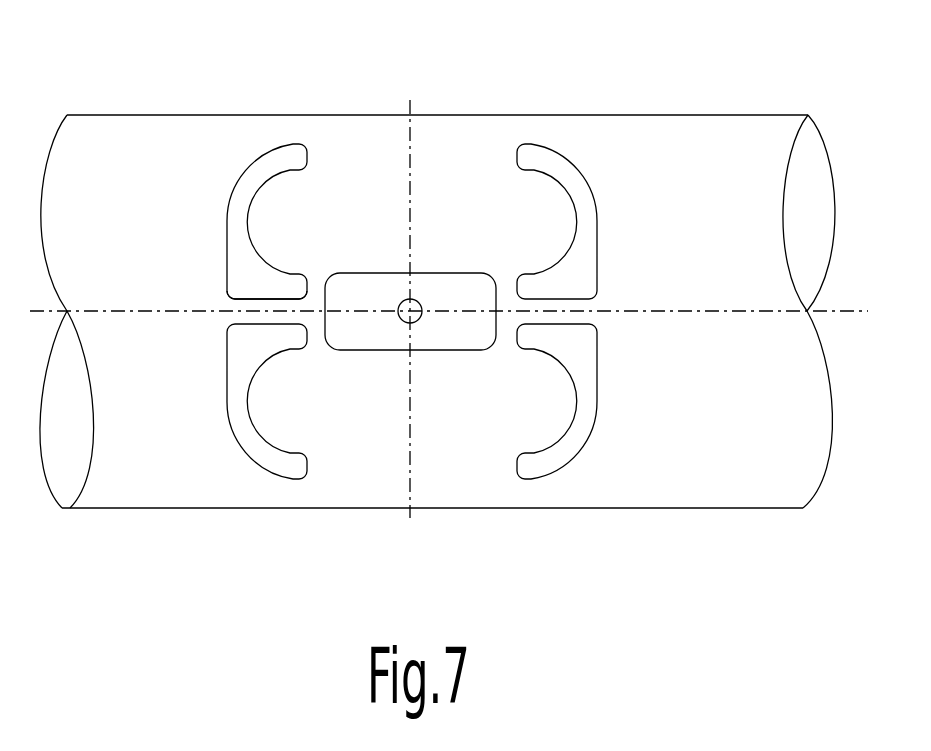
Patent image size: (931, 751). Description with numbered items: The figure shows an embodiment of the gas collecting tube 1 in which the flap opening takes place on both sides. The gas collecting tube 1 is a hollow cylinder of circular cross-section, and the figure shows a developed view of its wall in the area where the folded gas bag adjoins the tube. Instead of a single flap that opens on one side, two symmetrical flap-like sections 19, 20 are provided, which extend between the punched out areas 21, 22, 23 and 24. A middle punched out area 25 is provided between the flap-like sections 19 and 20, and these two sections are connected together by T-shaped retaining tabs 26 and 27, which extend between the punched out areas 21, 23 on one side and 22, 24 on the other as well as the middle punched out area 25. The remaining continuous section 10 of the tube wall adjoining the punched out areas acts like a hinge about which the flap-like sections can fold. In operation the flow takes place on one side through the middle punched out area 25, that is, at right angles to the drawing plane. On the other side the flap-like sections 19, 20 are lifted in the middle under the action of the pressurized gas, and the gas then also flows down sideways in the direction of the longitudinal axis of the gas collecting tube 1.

The gas collecting tube 1 is at (437, 307).
The continuous section 10 is at (346, 140).
The flap-like section 19 is at (342, 440).
The flap-like section 20 is at (457, 210).
The punched out area 21 is at (255, 450).
The punched out area 22 is at (578, 423).
The punched out area 23 is at (247, 197).
The punched out area 24 is at (585, 212).
The middle punched out area 25 is at (472, 333).
The T-shaped retaining tab 26 is at (240, 296).
The T-shaped retaining tab 27 is at (517, 314).